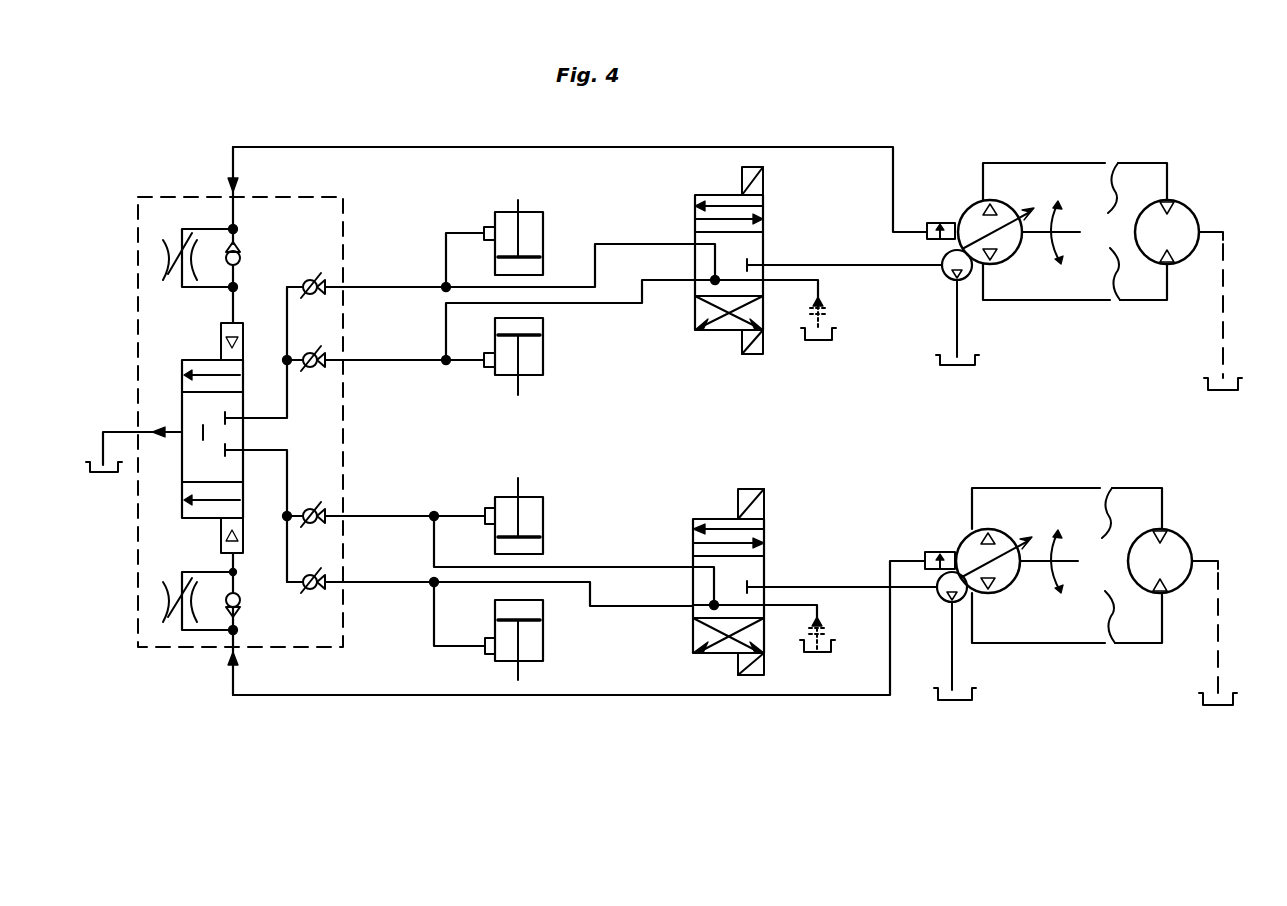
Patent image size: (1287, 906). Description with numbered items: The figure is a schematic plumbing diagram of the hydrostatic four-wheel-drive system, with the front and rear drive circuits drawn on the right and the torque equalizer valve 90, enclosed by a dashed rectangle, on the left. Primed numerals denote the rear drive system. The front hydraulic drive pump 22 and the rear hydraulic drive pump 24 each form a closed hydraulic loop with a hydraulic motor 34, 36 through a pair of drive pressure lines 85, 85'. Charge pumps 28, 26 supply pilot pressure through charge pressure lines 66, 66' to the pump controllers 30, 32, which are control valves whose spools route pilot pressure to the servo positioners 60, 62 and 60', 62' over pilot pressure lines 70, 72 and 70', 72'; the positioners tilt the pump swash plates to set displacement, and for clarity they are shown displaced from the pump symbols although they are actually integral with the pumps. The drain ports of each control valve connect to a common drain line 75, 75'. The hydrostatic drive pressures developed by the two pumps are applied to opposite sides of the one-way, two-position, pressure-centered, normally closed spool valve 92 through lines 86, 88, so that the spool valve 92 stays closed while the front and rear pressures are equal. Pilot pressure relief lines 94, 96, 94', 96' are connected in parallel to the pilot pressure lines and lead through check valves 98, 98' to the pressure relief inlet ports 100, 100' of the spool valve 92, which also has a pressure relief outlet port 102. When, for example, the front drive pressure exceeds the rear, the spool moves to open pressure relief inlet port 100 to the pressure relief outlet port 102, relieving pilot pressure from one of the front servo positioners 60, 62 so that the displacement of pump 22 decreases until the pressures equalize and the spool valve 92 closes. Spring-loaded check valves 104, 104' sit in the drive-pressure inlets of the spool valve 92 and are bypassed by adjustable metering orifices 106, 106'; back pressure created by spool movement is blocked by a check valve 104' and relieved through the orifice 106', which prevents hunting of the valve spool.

The front hydraulic drive pump 22 is at (999, 206).
The rear hydraulic drive pump 24 is at (999, 532).
The charge pump 26 is at (942, 601).
The charge pump 28 is at (944, 278).
The pump controller 30 is at (763, 250).
The pump controller 32 is at (766, 565).
The hydraulic motor 34 is at (1200, 213).
The hydraulic motor 36 is at (1193, 543).
The servo positioner 60 is at (528, 229).
The servo positioner 62 is at (527, 365).
The servo positioner 60' is at (532, 508).
The servo positioner 62' is at (530, 644).
The charge pressure line 66 is at (844, 243).
The charge pressure line 66' is at (842, 558).
The pilot pressure line 70 is at (662, 236).
The pilot pressure line 72 is at (706, 317).
The pilot pressure line 70' is at (661, 557).
The pilot pressure line 72' is at (717, 627).
The drain line 75 is at (836, 318).
The drain line 75' is at (837, 634).
The drive pressure line 85 is at (1075, 231).
The drive pressure line 85' is at (1067, 565).
The line 86 is at (641, 147).
The line 88 is at (648, 697).
The torque equalizer valve 90 is at (334, 249).
The spool valve 92 is at (247, 432).
The pilot pressure relief line 94 is at (510, 262).
The pilot pressure relief line 96 is at (510, 322).
The pilot pressure relief line 94' is at (509, 519).
The pilot pressure relief line 96' is at (509, 593).
The check valves 98 is at (312, 322).
The check valves 98' is at (315, 547).
The pressure relief inlet port 100 is at (281, 353).
The pressure relief inlet port 100' is at (284, 516).
The pressure relief outlet port 102 is at (120, 432).
The spring-loaded check valve 104 is at (258, 237).
The spring-loaded check valve 104' is at (261, 617).
The adjustable metering orifice 106 is at (153, 248).
The adjustable metering orifice 106' is at (153, 588).